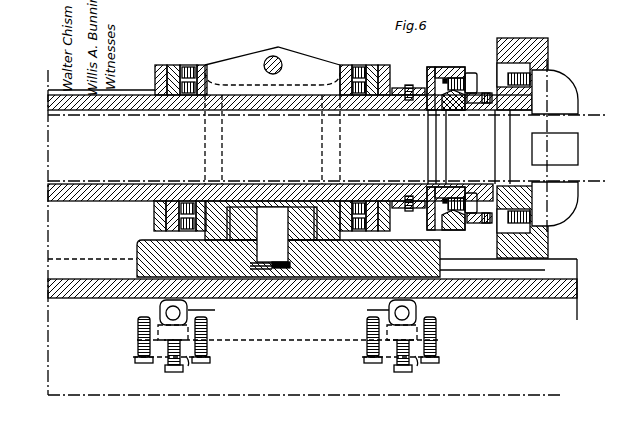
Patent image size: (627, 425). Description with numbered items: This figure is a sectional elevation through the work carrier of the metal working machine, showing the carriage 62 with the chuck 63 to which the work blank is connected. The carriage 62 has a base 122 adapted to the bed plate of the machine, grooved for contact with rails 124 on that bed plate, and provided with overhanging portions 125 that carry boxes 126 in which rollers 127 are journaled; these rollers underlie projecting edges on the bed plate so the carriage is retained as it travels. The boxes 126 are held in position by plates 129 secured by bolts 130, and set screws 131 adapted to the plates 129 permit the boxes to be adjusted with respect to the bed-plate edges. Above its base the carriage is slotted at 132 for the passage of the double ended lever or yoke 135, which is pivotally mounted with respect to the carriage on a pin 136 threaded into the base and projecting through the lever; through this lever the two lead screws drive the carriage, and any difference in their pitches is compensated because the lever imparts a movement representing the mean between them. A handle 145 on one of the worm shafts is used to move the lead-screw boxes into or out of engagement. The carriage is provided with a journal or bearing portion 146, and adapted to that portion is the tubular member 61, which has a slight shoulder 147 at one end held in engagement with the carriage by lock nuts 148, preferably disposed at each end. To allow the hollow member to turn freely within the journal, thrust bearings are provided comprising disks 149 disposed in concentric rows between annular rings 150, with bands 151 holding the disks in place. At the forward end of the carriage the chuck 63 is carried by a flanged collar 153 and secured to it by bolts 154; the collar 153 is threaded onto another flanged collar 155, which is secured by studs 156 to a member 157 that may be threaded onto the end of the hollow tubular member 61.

The tubular member 61 is at (116, 110).
The carriage 62 is at (295, 59).
The chuck 63 is at (568, 146).
The base 122 is at (437, 255).
The rails 124 is at (552, 272).
The overhanging portions 125 is at (285, 332).
The boxes 126 is at (160, 302).
The rollers 127 is at (288, 310).
The plates 129 is at (188, 360).
The bolts 130 is at (140, 348).
The set screws 131 is at (170, 372).
The slot 132 is at (332, 238).
The double ended lever or yoke 135 is at (257, 200).
The pin 136 is at (270, 238).
The handle 145 is at (337, 180).
The journal or bearing portion 146 is at (235, 197).
The shoulder 147 is at (161, 129).
The lock nuts 148 is at (160, 65).
The disks 149 is at (193, 67).
The annular rings 150 is at (186, 66).
The bands 151 is at (357, 66).
The flanged collar 153 is at (495, 146).
The bolts 154 is at (500, 68).
The flanged collar 155 is at (460, 110).
The studs 156 is at (455, 80).
The member 157 is at (436, 67).